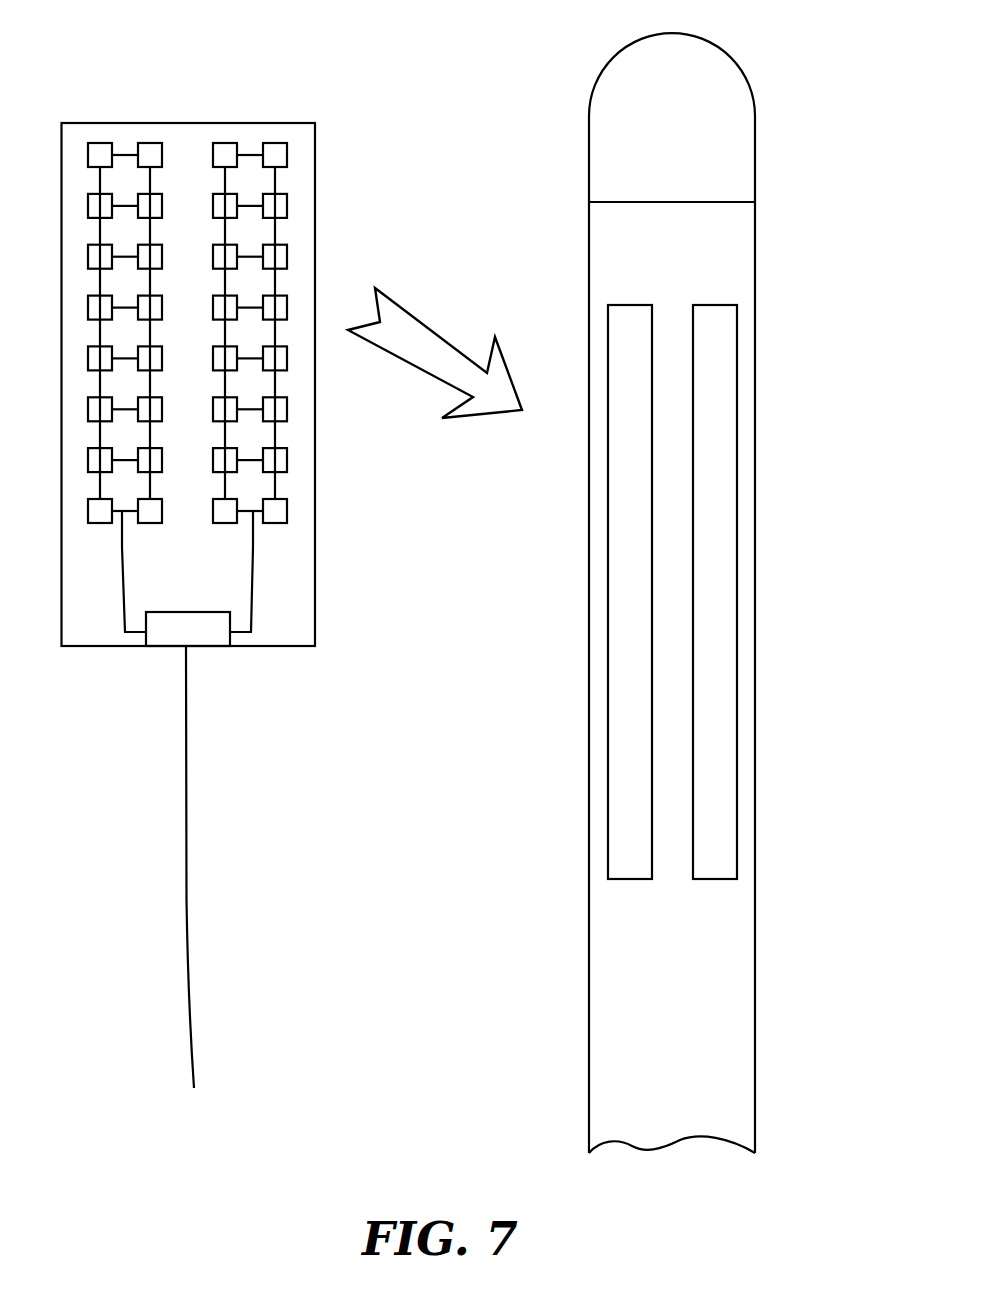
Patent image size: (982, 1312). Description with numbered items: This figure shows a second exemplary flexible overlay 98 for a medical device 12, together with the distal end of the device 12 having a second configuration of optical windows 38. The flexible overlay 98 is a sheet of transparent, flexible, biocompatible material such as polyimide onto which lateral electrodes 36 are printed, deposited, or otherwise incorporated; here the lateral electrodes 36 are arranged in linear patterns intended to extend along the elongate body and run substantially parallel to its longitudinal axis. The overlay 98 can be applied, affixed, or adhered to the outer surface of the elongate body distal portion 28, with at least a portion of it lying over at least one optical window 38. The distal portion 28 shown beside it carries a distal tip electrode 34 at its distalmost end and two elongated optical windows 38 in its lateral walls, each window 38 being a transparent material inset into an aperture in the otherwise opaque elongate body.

The flexible overlay 98 is at (237, 566).
The lateral electrodes 36 is at (290, 176).
The device 12 is at (683, 576).
The distal tip electrode 34 is at (640, 37).
The optical windows 38 is at (640, 460).
The elongate body distal portion 28 is at (588, 588).